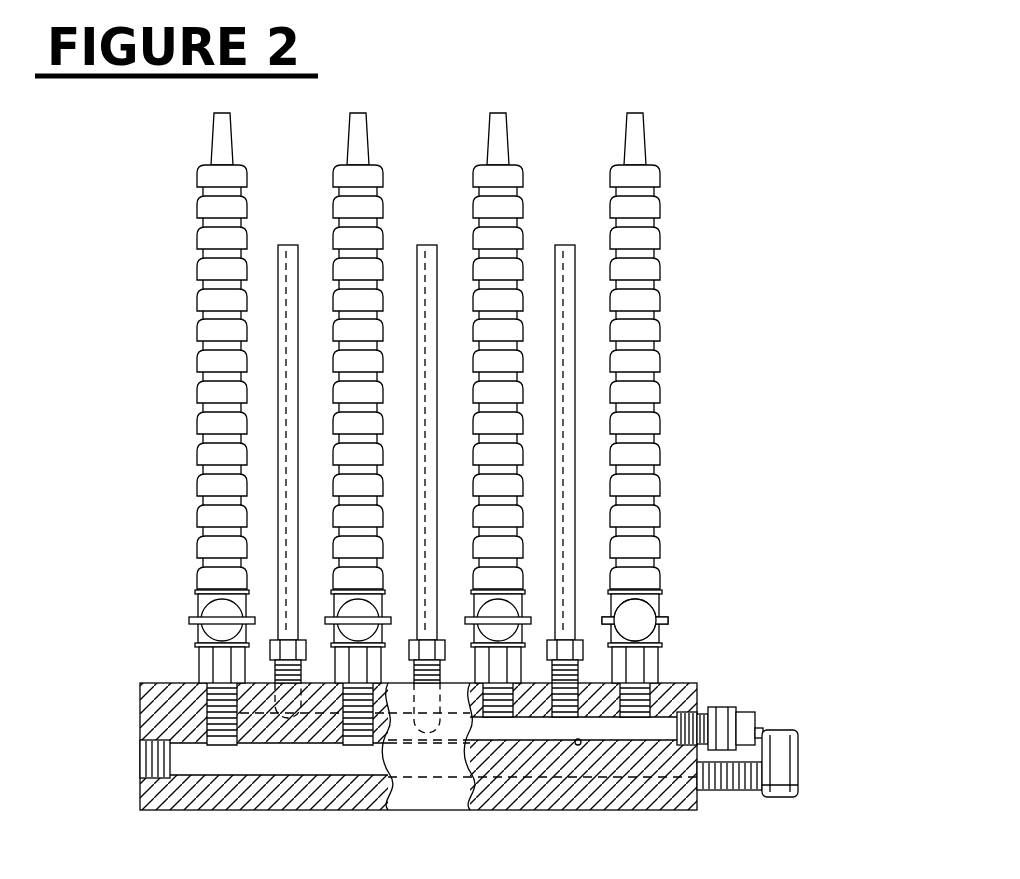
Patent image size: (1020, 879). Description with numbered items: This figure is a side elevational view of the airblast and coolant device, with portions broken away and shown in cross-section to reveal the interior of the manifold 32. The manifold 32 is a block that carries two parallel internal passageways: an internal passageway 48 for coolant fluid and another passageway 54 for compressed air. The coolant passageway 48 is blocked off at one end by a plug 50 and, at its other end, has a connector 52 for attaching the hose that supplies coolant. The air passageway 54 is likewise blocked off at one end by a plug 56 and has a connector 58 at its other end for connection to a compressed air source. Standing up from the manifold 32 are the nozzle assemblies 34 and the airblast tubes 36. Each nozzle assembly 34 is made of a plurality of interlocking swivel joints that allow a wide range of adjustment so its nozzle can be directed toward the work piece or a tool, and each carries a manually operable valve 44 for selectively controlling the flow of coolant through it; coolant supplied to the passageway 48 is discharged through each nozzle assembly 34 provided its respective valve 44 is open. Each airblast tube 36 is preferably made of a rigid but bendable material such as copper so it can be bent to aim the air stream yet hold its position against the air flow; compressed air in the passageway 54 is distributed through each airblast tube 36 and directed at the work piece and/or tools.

The manifold 32 is at (695, 686).
The nozzle assembly 34 is at (660, 462).
The airblast tube 36 is at (563, 245).
The manually operable valve 44 is at (660, 612).
The internal passageway 48 is at (316, 768).
The plug 50 is at (140, 760).
The connector 52 is at (800, 762).
The passageway 54 is at (580, 748).
The plug 56 is at (140, 692).
The connector 58 is at (742, 710).